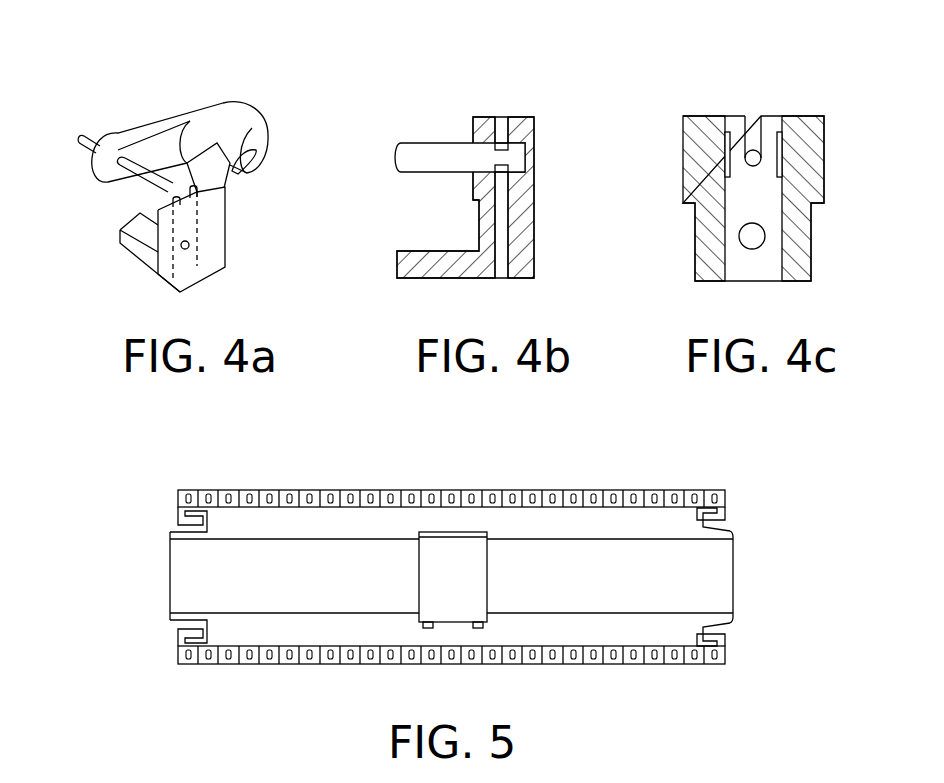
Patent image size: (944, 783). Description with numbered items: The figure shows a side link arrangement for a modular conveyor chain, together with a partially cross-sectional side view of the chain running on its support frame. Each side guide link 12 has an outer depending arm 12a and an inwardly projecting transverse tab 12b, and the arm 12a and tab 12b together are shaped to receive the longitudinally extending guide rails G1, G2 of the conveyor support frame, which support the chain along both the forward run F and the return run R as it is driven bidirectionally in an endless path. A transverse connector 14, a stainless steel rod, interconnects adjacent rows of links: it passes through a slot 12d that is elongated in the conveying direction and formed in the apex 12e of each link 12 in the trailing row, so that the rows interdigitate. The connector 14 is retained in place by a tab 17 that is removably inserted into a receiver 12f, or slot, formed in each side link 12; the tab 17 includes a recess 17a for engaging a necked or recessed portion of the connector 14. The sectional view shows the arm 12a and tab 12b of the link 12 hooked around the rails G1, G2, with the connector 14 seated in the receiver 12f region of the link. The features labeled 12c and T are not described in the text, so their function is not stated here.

In FIG. 4b, the side guide link 12 is at (523, 115).
In FIG. 4a, the outer depending arm 12a is at (208, 268).
In FIG. 4b, the outer depending arm 12a is at (532, 257).
In FIG. 4a, the transverse tab 12b is at (140, 230).
In FIG. 4b, the transverse tab 12b is at (398, 263).
In FIG. 4a, the arm of clamping member 12c is at (118, 143).
In FIG. 4a, the slot 12d is at (243, 150).
In FIG. 4a, the apex 12e is at (260, 163).
In FIG. 4b, the receiver 12f is at (502, 130).
In FIG. 4a, the transverse connector 14 is at (80, 148).
In FIG. 4b, the transverse connector 14 is at (423, 173).
In FIG. 4c, the transverse connector 14 is at (755, 140).
In FIG. 4c, the tab 17 is at (762, 270).
In FIG. 4c, the recess 17a is at (758, 155).
In FIG. 5, the tape carrier T is at (578, 573).
In FIG. 5, the forward run F is at (351, 512).
In FIG. 5, the return run R is at (351, 645).
In FIG. 5, the guide rail G1 is at (168, 592).
In FIG. 5, the guide rail G2 is at (733, 617).